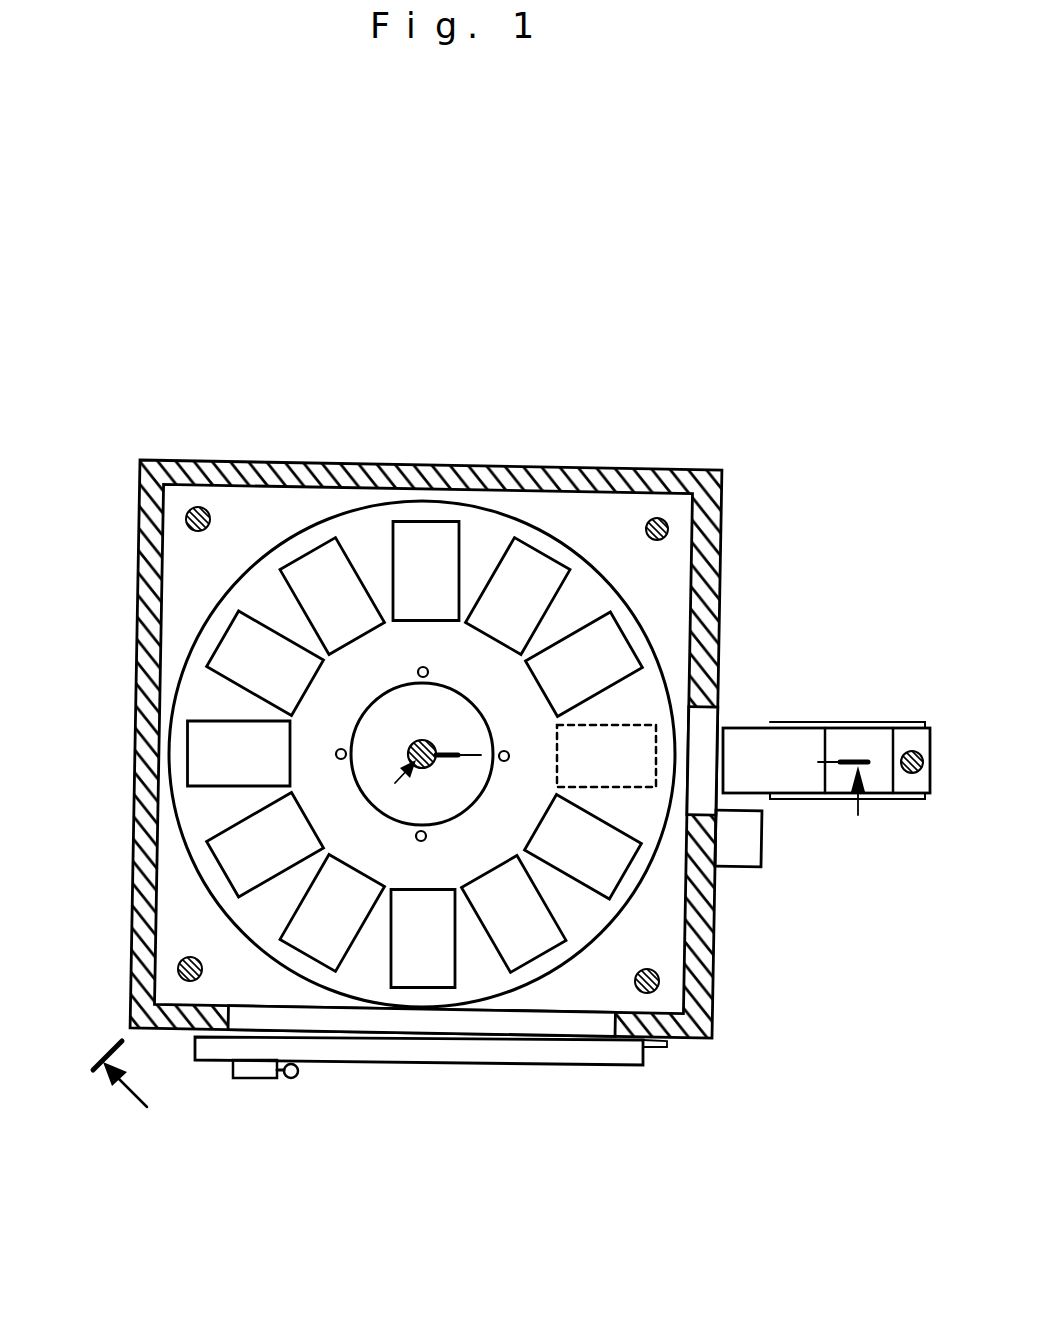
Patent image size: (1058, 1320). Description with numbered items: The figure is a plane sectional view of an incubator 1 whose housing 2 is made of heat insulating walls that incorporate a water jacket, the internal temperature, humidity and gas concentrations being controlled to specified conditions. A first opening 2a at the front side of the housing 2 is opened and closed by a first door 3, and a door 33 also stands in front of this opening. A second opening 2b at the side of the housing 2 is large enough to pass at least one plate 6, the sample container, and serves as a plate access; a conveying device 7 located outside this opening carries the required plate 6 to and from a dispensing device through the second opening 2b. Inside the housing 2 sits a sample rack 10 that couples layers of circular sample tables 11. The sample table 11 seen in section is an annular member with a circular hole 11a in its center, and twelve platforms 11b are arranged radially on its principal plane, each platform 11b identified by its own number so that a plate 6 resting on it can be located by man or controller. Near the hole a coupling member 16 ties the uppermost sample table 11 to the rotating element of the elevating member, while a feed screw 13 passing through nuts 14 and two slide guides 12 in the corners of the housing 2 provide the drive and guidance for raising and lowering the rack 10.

The incubator 1 is at (452, 298).
The housing 2 is at (486, 811).
The first opening 2a is at (353, 1016).
The second opening 2b is at (729, 716).
The first door 3 is at (469, 909).
The plate 6 is at (411, 538).
The conveying device 7 is at (908, 746).
The sample rack 10 is at (560, 527).
The sample table 11 is at (473, 535).
The circular hole 11a is at (356, 781).
The platform 11b is at (634, 724).
The slide guide 12 is at (195, 506).
The feed screw 13 is at (659, 517).
The nut 14 is at (431, 742).
The coupling member 16 is at (342, 748).
The door 33 is at (538, 1055).